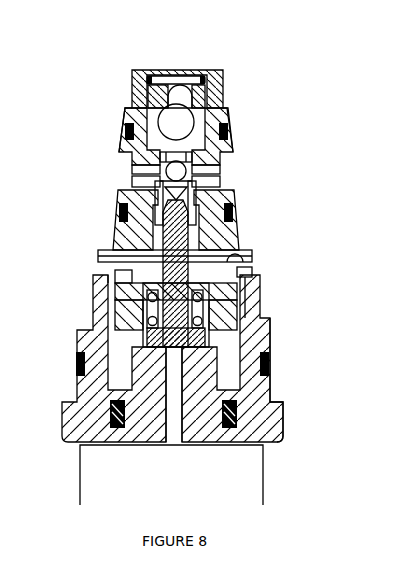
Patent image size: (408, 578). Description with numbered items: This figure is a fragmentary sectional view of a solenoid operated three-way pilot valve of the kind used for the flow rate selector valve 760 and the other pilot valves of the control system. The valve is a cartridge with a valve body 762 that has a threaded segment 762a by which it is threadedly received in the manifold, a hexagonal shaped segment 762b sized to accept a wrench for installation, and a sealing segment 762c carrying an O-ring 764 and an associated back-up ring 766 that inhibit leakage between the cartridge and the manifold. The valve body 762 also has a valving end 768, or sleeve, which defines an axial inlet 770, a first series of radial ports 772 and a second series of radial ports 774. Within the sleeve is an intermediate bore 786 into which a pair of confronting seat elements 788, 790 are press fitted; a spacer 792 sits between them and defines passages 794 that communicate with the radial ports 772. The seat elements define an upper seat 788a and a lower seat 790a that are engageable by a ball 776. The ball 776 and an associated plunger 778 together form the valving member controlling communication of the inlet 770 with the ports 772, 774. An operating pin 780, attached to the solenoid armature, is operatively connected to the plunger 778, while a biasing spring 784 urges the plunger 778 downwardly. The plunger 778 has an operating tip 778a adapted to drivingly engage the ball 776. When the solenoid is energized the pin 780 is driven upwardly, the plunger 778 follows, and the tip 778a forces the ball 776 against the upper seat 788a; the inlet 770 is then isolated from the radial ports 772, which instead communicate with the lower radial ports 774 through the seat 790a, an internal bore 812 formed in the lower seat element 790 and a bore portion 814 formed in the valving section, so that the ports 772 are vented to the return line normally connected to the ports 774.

The flow rate selector valve 760 is at (280, 91).
The axial inlet 770 is at (205, 74).
The upper seat 788a is at (148, 81).
The intermediate bore 786 is at (160, 116).
The upper seat element 788 is at (157, 117).
The valving end 768 is at (240, 146).
The spacer 792 is at (128, 143).
The passages 794 is at (134, 168).
The lower seat element 790 is at (150, 183).
The operating tip 778a is at (160, 191).
The first series of radial ports 772 is at (186, 169).
The ball 776 is at (190, 170).
The lower seat 790a is at (200, 187).
The internal bore 812 is at (190, 212).
The bore portion 814 is at (150, 249).
The second series of radial ports 774 is at (245, 250).
The valve body 762 is at (267, 335).
The threaded segment 762a is at (260, 292).
The hexagonal shaped segment 762b is at (282, 425).
The sealing segment 762c is at (272, 390).
The O-ring 764 is at (268, 361).
The back-up ring 766 is at (272, 377).
The operating pin 780 is at (174, 397).
The plunger 778 is at (157, 283).
The biasing spring 784 is at (153, 323).